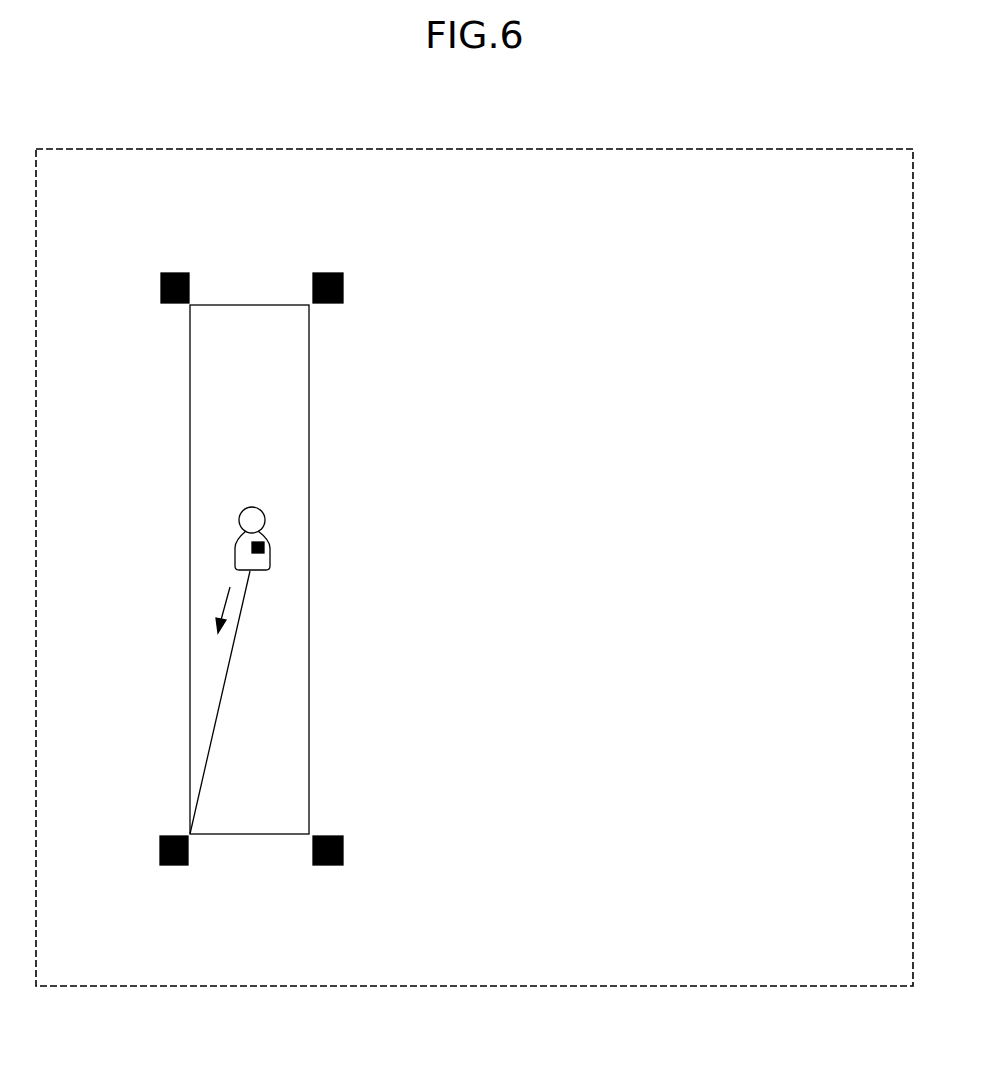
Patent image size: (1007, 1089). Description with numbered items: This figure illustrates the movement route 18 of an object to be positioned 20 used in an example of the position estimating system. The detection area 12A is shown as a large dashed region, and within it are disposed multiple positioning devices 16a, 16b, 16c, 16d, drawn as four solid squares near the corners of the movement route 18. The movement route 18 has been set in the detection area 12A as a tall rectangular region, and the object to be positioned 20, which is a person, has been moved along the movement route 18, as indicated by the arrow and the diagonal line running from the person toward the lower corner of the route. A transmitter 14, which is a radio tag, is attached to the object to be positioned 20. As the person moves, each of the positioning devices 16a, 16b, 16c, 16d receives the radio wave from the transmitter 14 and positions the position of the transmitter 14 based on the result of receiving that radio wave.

The detection area 12A is at (851, 145).
The transmitter 14 is at (265, 548).
The positioning device 16a is at (167, 273).
The positioning device 16b is at (333, 273).
The positioning device 16c is at (170, 867).
The positioning device 16d is at (327, 865).
The movement route 18 is at (309, 643).
The object to be positioned 20 is at (262, 510).